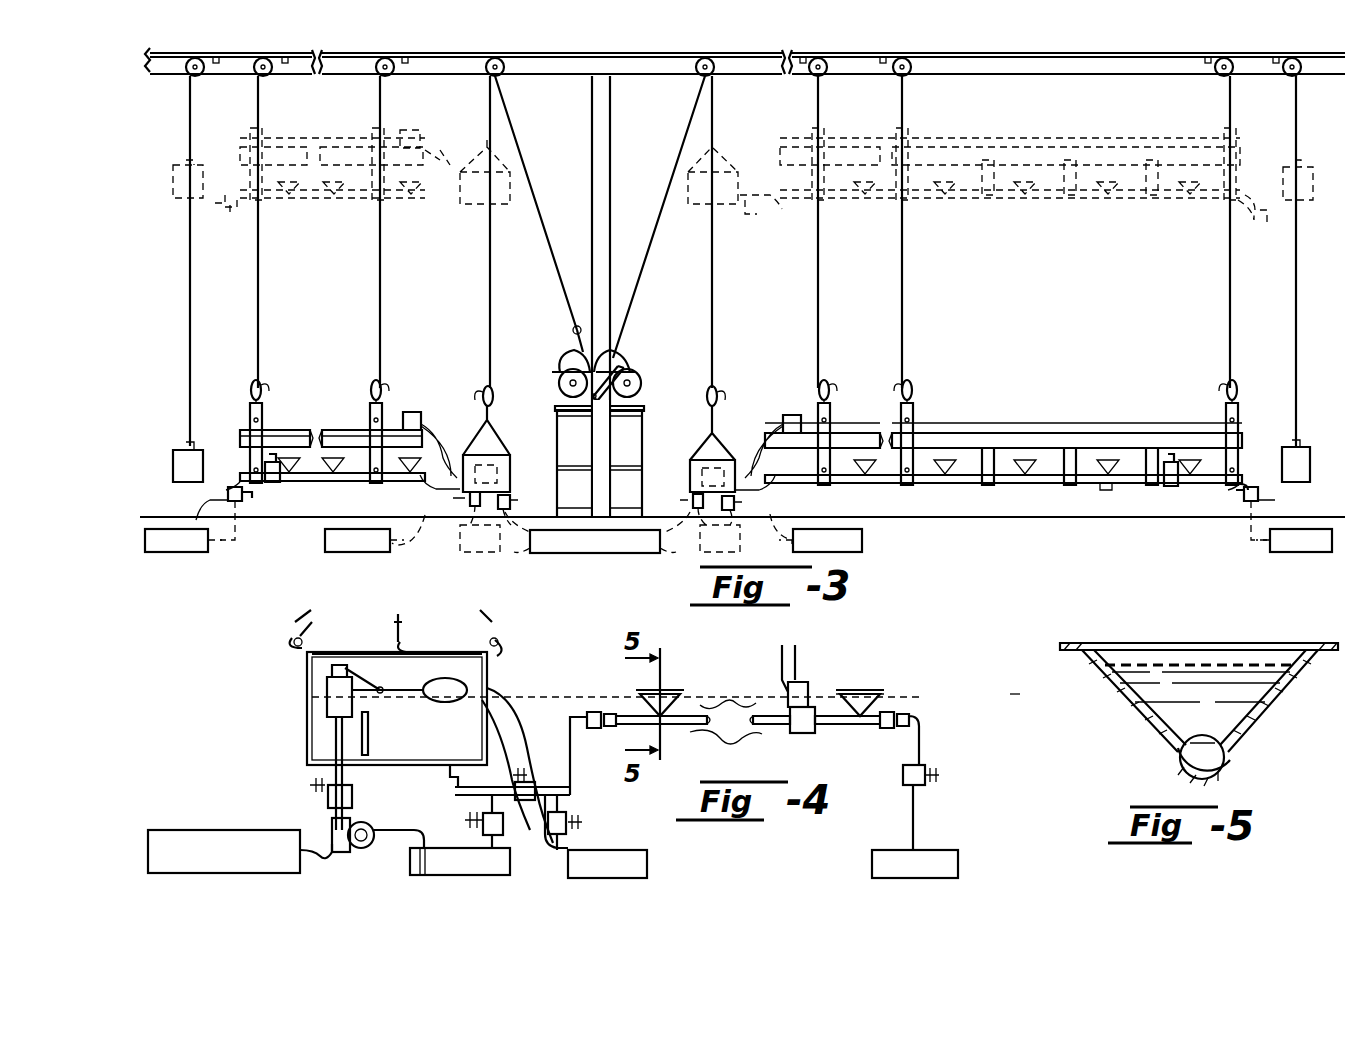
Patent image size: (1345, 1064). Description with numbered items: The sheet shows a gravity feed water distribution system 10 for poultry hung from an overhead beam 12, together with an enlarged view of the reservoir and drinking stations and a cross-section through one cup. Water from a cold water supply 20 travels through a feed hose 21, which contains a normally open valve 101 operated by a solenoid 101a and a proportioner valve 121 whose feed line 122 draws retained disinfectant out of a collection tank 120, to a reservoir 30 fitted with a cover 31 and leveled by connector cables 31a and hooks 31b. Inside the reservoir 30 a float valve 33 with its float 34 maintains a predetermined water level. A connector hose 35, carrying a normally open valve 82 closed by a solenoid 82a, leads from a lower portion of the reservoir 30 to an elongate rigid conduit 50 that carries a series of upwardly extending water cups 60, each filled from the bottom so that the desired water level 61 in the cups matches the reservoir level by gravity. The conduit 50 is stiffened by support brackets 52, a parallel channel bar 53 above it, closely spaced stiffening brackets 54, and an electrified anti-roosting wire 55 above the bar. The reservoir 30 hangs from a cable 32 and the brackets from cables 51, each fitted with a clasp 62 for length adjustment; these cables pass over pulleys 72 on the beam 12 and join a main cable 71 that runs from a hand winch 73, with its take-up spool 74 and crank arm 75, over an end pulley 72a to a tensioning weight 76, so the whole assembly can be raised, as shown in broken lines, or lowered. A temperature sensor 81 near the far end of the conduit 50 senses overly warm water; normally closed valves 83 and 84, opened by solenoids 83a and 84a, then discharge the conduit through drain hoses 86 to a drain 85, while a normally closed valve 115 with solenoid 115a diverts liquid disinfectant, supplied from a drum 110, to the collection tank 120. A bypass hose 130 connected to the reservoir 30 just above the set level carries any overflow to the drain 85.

In FIG. 3, the gravity feed water distribution system 10 is at (340, 128).
In FIG. 4, the gravity feed water distribution system 10 is at (832, 648).
In FIG. 3, the beam 12 is at (616, 54).
In FIG. 3, the cold water supply 20 is at (598, 553).
In FIG. 4, the cold water supply 20 is at (190, 826).
In FIG. 3, the feed hose 21 is at (516, 548).
In FIG. 4, the feed hose 21 is at (328, 858).
In FIG. 3, the reservoir 30 is at (514, 480).
In FIG. 4, the reservoir 30 is at (300, 734).
In FIG. 4, the cover 31 is at (368, 650).
In FIG. 4, the connector cables 31a is at (492, 624).
In FIG. 4, the hooks 31b is at (290, 658).
In FIG. 3, the cable 32 is at (490, 306).
In FIG. 4, the float valve 33 is at (374, 702).
In FIG. 4, the float 34 is at (460, 700).
In FIG. 3, the connector hose 35 is at (422, 482).
In FIG. 4, the connector hose 35 is at (452, 776).
In FIG. 3, the conduit 50 is at (334, 482).
In FIG. 4, the conduit 50 is at (753, 725).
In FIG. 5, the conduit 50 is at (1174, 790).
In FIG. 3, the cable 51 is at (383, 262).
In FIG. 3, the support brackets 52 is at (248, 458).
In FIG. 3, the channel bar 53 is at (334, 432).
In FIG. 3, the stiffening brackets 54 is at (1136, 486).
In FIG. 3, the anti-roosting wire 55 is at (338, 414).
In FIG. 3, the water cups 60 is at (334, 470).
In FIG. 4, the water cups 60 is at (672, 692).
In FIG. 5, the water cups 60 is at (1284, 644).
In FIG. 4, the desired water level 61 is at (892, 702).
In FIG. 5, the desired water level 61 is at (1220, 662).
In FIG. 3, the clasps 62 is at (252, 394).
In FIG. 3, the main cable 71 is at (190, 302).
In FIG. 3, the pulleys 72 is at (262, 60).
In FIG. 3, the end pulley 72a is at (189, 60).
In FIG. 3, the winch 73 is at (564, 364).
In FIG. 3, the take-up spool 74 is at (560, 390).
In FIG. 3, the crank arm 75 is at (578, 330).
In FIG. 3, the weight 76 is at (158, 460).
In FIG. 3, the temperature sensor 81 is at (274, 486).
In FIG. 4, the temperature sensor 81 is at (804, 733).
In FIG. 4, the valve 82 is at (520, 780).
In FIG. 4, the solenoid 82a is at (522, 766).
In FIG. 4, the valve 83 is at (568, 830).
In FIG. 4, the solenoid 83a is at (584, 822).
In FIG. 3, the valve 84 is at (228, 492).
In FIG. 4, the valve 84 is at (905, 780).
In FIG. 4, the solenoid 84a is at (940, 778).
In FIG. 3, the drain 85 is at (196, 562).
In FIG. 4, the drain 85 is at (647, 862).
In FIG. 3, the drain hoses 86 is at (224, 504).
In FIG. 4, the drain hoses 86 is at (560, 856).
In FIG. 4, the valve 101 is at (330, 798).
In FIG. 4, the solenoid 101a is at (312, 786).
In FIG. 3, the drum 110 is at (562, 438).
In FIG. 4, the valve 115 is at (504, 826).
In FIG. 4, the solenoid 115a is at (468, 822).
In FIG. 3, the collection tank 120 is at (478, 552).
In FIG. 4, the collection tank 120 is at (460, 860).
In FIG. 3, the proportioner valve 121 is at (506, 500).
In FIG. 4, the proportioner valve 121 is at (374, 848).
In FIG. 4, the feed line 122 is at (384, 826).
In FIG. 3, the bypass hose 130 is at (440, 470).
In FIG. 4, the bypass hose 130 is at (540, 720).